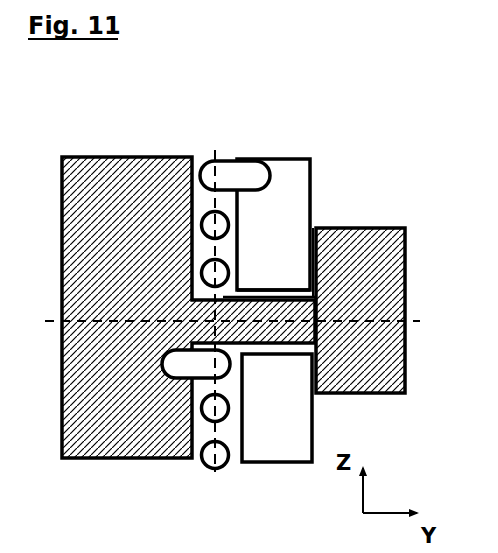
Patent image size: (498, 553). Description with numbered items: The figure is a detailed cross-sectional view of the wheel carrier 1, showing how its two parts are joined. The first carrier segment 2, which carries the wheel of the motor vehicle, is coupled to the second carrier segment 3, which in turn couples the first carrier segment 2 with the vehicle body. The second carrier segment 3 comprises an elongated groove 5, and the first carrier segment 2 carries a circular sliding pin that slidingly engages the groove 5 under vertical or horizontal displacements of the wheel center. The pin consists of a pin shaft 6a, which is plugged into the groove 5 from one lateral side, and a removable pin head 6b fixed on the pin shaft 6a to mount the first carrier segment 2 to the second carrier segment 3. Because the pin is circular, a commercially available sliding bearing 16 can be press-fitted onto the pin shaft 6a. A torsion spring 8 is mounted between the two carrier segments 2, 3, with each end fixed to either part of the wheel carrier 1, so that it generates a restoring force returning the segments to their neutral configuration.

The wheel carrier 1 is at (306, 90).
The first carrier segment 2 is at (103, 157).
The second carrier segment 3 is at (300, 159).
The elongated groove 5 is at (318, 248).
The pin shaft 6a is at (280, 328).
The removable pin head 6b is at (355, 394).
The torsion spring 8 is at (226, 160).
The sliding bearing 16 is at (304, 283).